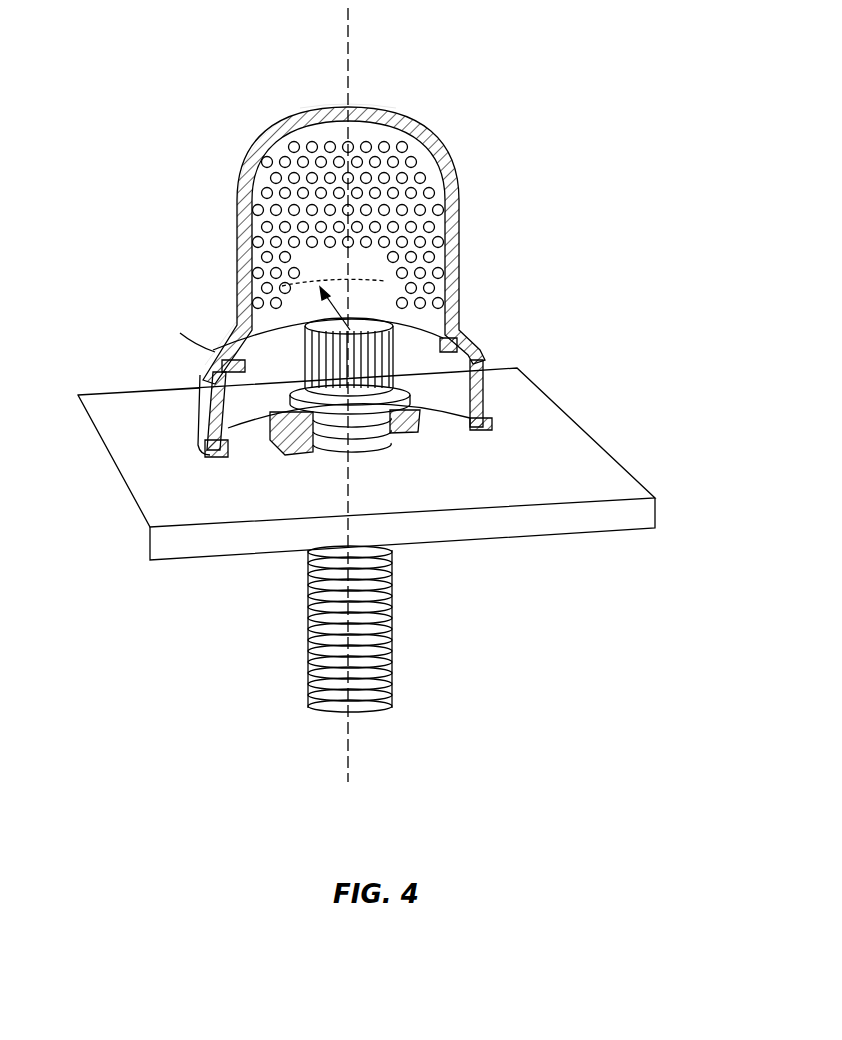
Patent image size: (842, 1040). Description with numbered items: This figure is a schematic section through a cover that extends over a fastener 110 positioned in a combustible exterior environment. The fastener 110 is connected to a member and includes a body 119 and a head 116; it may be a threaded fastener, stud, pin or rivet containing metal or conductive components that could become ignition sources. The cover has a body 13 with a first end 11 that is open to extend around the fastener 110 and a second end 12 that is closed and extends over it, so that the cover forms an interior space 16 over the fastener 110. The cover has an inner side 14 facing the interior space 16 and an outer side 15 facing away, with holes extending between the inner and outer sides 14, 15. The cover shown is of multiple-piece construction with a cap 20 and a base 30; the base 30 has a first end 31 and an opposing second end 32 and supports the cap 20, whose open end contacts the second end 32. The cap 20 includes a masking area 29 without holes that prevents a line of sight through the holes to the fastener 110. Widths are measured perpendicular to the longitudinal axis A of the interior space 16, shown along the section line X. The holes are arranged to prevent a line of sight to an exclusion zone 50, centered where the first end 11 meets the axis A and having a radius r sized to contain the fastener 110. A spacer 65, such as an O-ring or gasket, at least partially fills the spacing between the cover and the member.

The axis X is at (350, 28).
The longitudinal axis A is at (347, 50).
The second end 12 is at (350, 105).
The cap 20 is at (440, 128).
The outer side 15 is at (250, 150).
The body 13 is at (236, 212).
The inner side 14 is at (249, 268).
The interior space 16 is at (410, 180).
The masking area 29 is at (365, 257).
The radius r is at (310, 305).
The head 116 is at (395, 360).
The base 30 is at (484, 362).
The second end 32 is at (213, 362).
The exclusion zone 50 is at (280, 378).
The spacer 65 is at (493, 420).
The first end 11 is at (206, 443).
The first end 31 is at (206, 460).
The fastener 110 is at (325, 629).
The body 119 is at (386, 593).